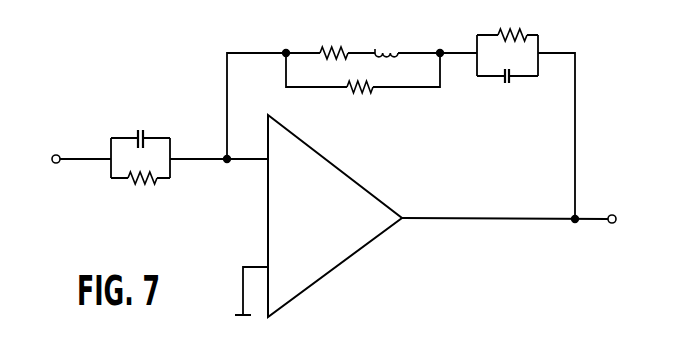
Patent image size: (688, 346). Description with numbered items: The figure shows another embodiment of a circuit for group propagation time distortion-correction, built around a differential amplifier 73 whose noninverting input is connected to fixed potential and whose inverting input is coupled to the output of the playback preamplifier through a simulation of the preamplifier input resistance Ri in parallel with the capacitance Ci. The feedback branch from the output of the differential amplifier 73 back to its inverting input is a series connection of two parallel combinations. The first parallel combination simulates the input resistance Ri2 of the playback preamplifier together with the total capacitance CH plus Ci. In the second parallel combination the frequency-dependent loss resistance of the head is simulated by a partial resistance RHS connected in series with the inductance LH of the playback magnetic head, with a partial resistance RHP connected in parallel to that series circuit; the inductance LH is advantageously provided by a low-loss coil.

The differential amplifier 73 is at (341, 248).
The capacitance Ci is at (140, 125).
The input resistance of the playback preamplifier Ri is at (142, 192).
The partial resistance RHS is at (333, 39).
The inductance of the playback magnetic head LH is at (386, 38).
The partial resistance RHP is at (359, 103).
The input resistance of the playback preamplifier Ri2 is at (512, 23).
The capacitance CH is at (505, 92).